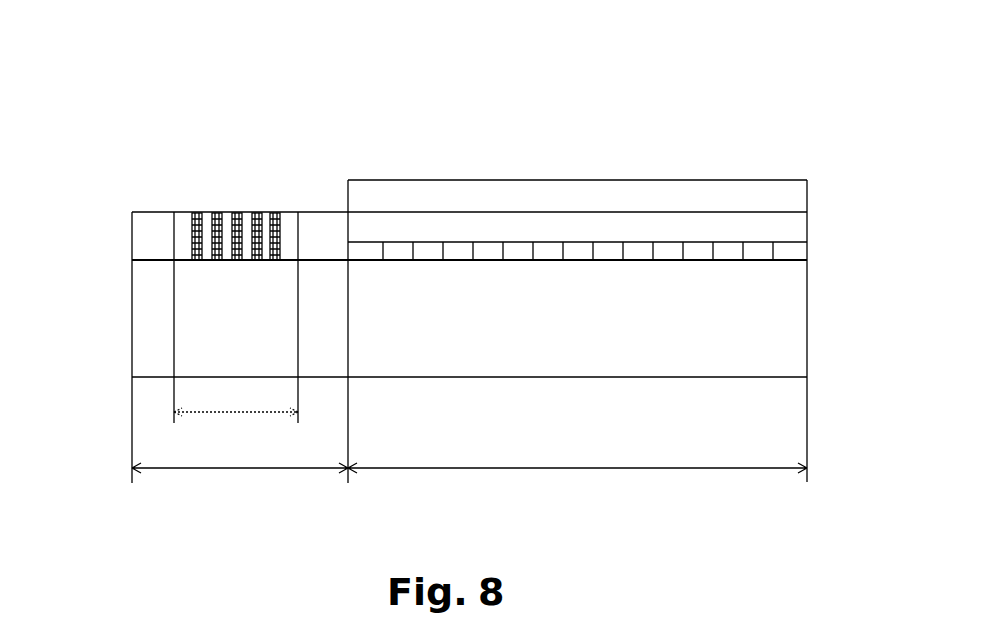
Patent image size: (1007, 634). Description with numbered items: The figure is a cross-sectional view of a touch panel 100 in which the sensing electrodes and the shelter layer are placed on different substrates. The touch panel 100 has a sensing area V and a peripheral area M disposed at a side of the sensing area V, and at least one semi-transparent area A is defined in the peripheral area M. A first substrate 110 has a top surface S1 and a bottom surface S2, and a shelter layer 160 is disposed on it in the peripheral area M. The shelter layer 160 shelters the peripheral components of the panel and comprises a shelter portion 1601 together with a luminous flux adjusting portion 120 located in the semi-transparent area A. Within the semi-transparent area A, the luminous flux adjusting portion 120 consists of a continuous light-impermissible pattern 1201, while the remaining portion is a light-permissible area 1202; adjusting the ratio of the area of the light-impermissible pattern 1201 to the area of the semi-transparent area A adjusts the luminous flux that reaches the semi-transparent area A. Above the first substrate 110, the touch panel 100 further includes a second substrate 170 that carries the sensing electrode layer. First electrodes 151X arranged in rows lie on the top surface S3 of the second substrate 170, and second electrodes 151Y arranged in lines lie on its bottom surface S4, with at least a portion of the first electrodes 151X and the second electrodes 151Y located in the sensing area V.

The touch panel 100 is at (717, 72).
The first substrate 110 is at (140, 322).
The luminous flux adjusting portion 120 is at (256, 198).
The light-impermissible pattern 1201 is at (292, 218).
The light-permissible area 1202 is at (227, 245).
The shelter layer 160 is at (263, 128).
The shelter portion 1601 is at (149, 235).
The second substrate 170 is at (665, 228).
The first electrodes 151X is at (497, 200).
The second electrodes 151Y is at (637, 262).
The top surface S1 is at (732, 260).
The bottom surface S2 is at (735, 377).
The top surface S3 is at (377, 212).
The bottom surface S4 is at (370, 243).
The semi-transparent area A is at (236, 397).
The peripheral area M is at (240, 451).
The sensing area V is at (577, 452).